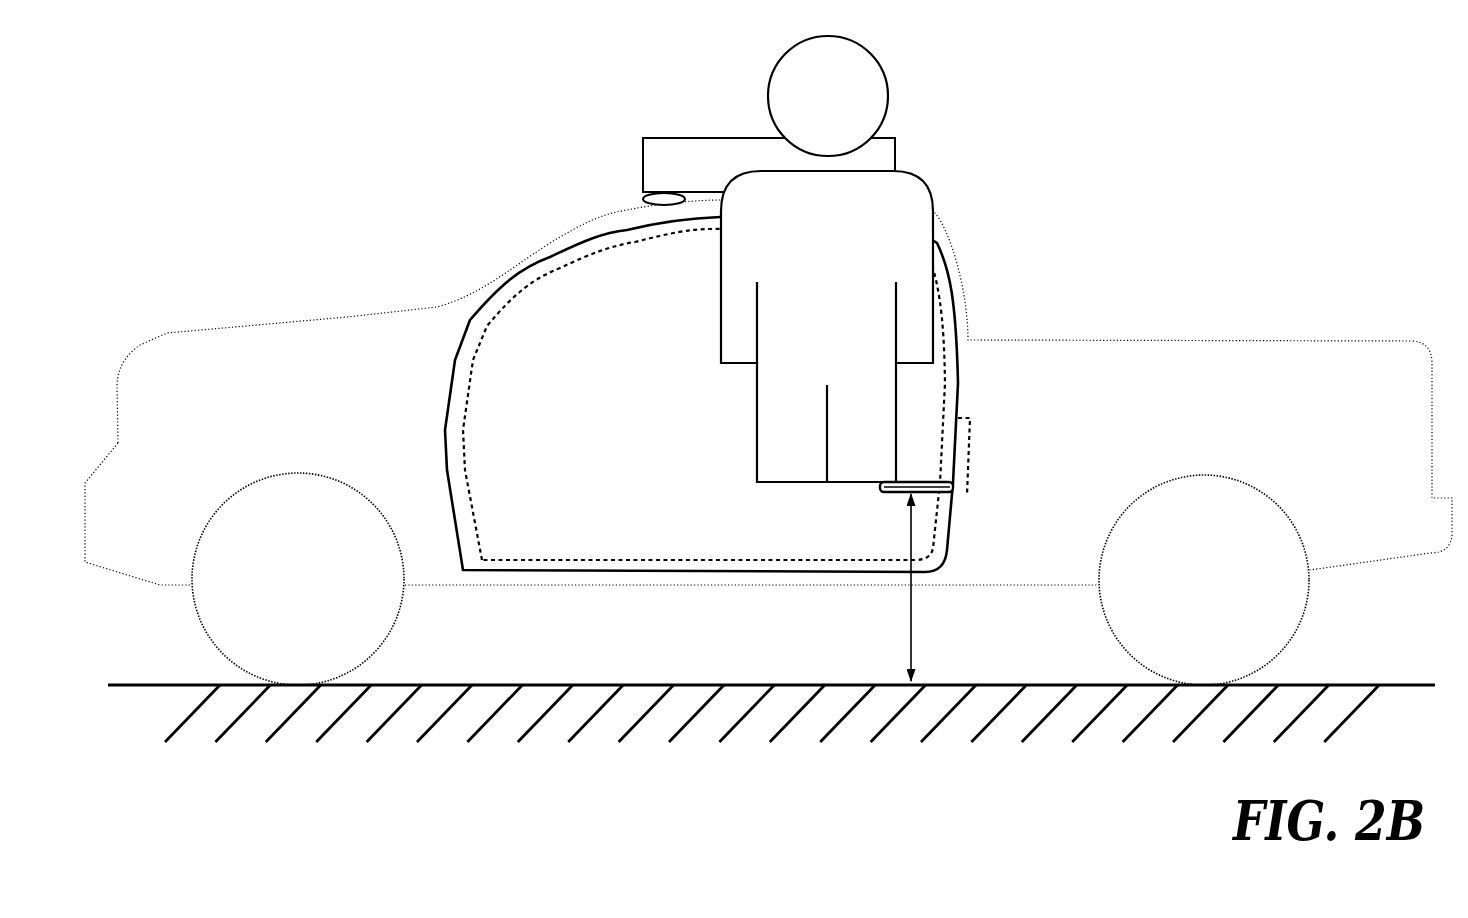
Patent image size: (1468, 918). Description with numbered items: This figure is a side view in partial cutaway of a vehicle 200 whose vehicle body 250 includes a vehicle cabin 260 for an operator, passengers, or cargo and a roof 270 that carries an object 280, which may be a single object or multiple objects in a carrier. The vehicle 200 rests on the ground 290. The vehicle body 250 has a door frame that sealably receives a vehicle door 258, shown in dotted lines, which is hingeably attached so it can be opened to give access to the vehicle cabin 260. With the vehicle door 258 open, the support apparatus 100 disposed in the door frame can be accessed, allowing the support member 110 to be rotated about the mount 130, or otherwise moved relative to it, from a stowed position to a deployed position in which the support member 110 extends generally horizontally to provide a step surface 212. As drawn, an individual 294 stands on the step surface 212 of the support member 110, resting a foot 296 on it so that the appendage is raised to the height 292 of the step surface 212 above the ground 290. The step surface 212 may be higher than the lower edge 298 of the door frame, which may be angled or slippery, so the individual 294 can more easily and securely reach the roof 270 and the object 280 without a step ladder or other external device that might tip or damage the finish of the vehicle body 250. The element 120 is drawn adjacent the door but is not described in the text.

The support apparatus 100 is at (985, 450).
The support member 110 is at (875, 487).
The door lower panel / housing 120 is at (968, 430).
The mount 130 is at (953, 493).
The vehicle 200 is at (207, 217).
The step surface 212 is at (905, 477).
The vehicle body 250 is at (347, 315).
The vehicle door 258 is at (507, 308).
The vehicle cabin 260 is at (547, 277).
The roof 270 is at (620, 208).
The object 280 is at (643, 145).
The ground 290 is at (1357, 680).
The height 292 is at (911, 653).
The individual 294 is at (743, 388).
The foot 296 is at (900, 486).
The lower edge 298 is at (533, 570).